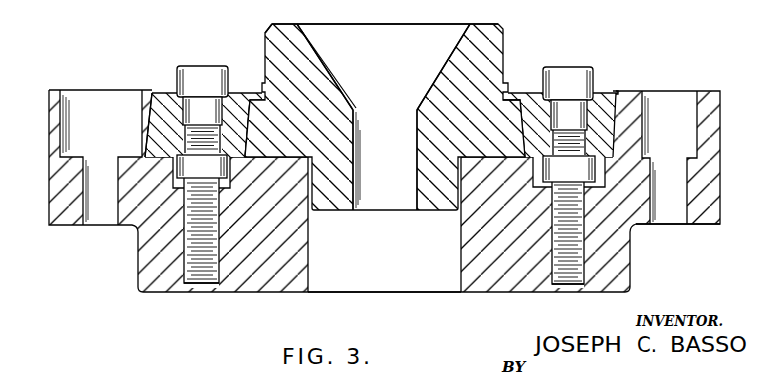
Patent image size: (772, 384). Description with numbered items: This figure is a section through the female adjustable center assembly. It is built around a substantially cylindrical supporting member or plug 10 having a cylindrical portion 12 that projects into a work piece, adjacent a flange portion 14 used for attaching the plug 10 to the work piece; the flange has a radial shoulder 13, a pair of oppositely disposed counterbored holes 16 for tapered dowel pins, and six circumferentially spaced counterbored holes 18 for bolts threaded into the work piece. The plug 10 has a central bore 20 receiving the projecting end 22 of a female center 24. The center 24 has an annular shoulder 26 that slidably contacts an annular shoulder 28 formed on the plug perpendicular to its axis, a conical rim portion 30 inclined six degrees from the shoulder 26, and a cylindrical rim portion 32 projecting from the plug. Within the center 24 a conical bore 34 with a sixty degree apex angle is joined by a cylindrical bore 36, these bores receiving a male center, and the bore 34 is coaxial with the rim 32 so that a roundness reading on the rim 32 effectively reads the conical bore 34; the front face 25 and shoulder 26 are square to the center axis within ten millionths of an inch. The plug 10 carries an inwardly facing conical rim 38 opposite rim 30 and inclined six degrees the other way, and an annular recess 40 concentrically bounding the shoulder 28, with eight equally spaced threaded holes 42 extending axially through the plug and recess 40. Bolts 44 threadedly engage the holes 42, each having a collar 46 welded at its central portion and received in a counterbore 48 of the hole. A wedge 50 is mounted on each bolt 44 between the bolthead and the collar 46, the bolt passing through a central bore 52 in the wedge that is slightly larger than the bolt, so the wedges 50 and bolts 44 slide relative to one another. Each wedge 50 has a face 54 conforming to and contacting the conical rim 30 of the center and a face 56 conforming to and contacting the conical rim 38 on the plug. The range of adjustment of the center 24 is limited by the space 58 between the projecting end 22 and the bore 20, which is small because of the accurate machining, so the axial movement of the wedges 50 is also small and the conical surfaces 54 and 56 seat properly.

The supporting member or plug 10 is at (715, 86).
The cylindrical portion 12 is at (632, 273).
The radial shoulder 13 is at (703, 226).
The flange portion 14 is at (720, 150).
The counterbored holes 16 is at (103, 175).
The counterbored holes 18 is at (668, 173).
The central bore 20 is at (460, 292).
The projecting end 22 is at (328, 212).
The female center 24 is at (503, 24).
The front face 25 is at (406, 24).
The annular shoulder 26 is at (487, 160).
The annular shoulder 28 is at (532, 157).
The conical rim portion 30 is at (245, 96).
The cylindrical rim portion 32 is at (266, 36).
The conical bore 34 is at (446, 69).
The cylindrical bore 36 is at (417, 152).
The inwardly facing conical rim 38 is at (612, 93).
The annular recess 40 is at (597, 156).
The threaded holes 42 is at (183, 284).
The bolts 44 is at (565, 67).
The collar 46 is at (542, 182).
The counterbores 48 is at (587, 187).
The wedge 50 is at (160, 103).
The central bore 52 is at (221, 139).
The face 54 is at (248, 124).
The face 56 is at (150, 123).
The space 58 is at (456, 211).